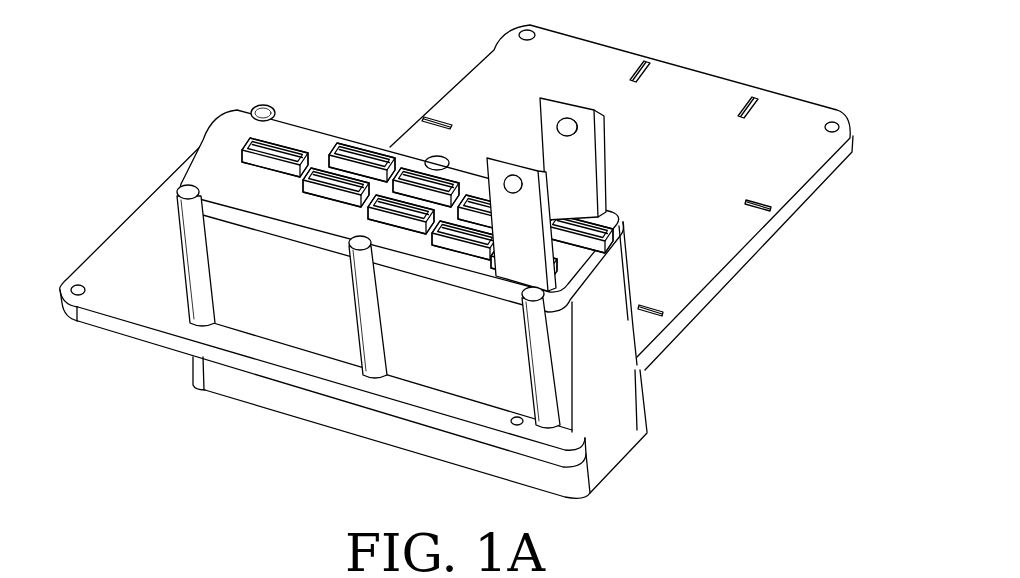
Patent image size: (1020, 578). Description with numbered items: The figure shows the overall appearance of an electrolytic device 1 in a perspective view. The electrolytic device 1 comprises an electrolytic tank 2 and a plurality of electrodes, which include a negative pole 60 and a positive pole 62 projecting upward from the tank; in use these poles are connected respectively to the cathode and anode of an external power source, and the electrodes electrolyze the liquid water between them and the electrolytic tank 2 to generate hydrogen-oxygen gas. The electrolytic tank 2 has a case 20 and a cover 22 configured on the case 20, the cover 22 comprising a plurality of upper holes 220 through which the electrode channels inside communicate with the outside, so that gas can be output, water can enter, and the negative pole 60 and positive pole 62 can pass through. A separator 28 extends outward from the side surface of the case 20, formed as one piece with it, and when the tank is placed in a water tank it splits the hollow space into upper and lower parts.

The electrolytic device 1 is at (138, 82).
The electrolytic tank 2 is at (600, 367).
The case 20 is at (270, 302).
The cover 22 is at (590, 262).
The upper holes 220 is at (288, 147).
The separator 28 is at (700, 148).
The negative pole 60 is at (520, 238).
The positive pole 62 is at (590, 170).